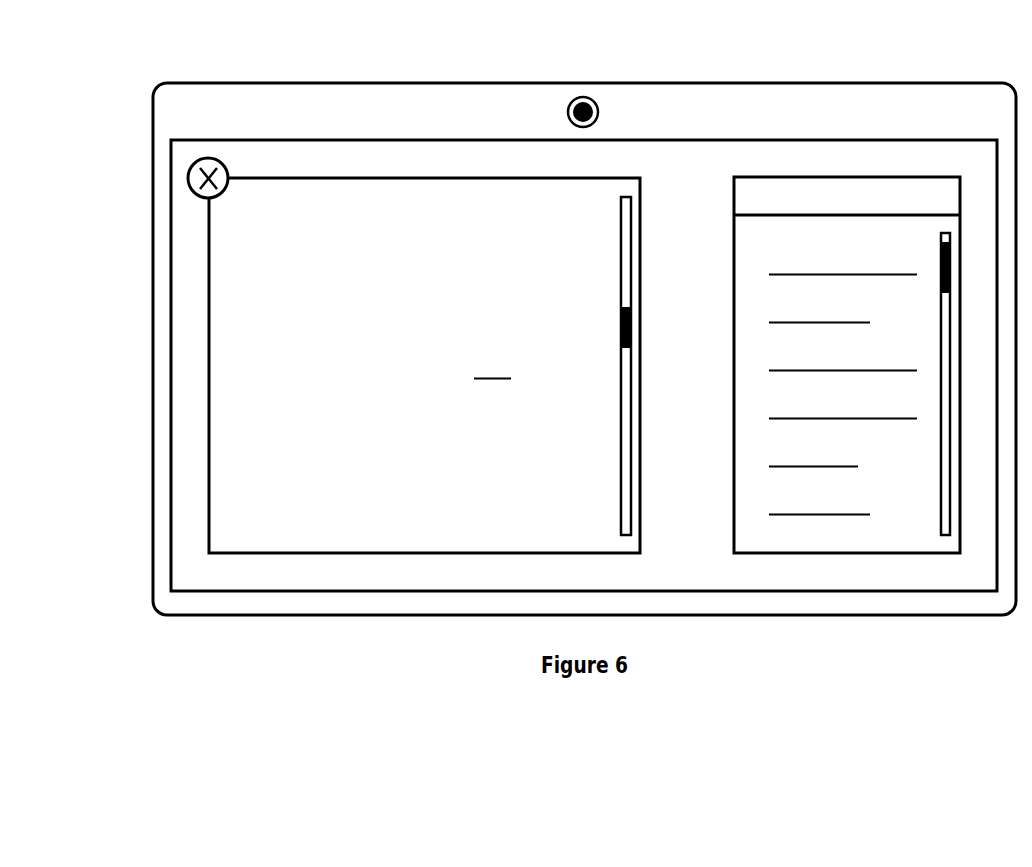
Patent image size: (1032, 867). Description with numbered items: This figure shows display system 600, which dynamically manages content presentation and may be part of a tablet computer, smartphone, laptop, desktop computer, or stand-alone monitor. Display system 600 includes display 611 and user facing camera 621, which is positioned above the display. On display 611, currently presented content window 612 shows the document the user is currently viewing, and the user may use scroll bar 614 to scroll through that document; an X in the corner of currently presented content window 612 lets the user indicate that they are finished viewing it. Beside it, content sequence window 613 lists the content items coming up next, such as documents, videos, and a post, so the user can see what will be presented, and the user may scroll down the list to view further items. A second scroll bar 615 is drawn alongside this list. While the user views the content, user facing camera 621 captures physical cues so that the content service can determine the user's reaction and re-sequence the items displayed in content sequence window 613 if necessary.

The display system 600 is at (130, 46).
The display 611 is at (330, 135).
The currently presented content window 612 is at (647, 203).
The content sequence window 613 is at (727, 278).
The scroll bar 614 is at (614, 240).
The up next panel scroll bar 615 is at (933, 485).
The user facing camera 621 is at (565, 108).